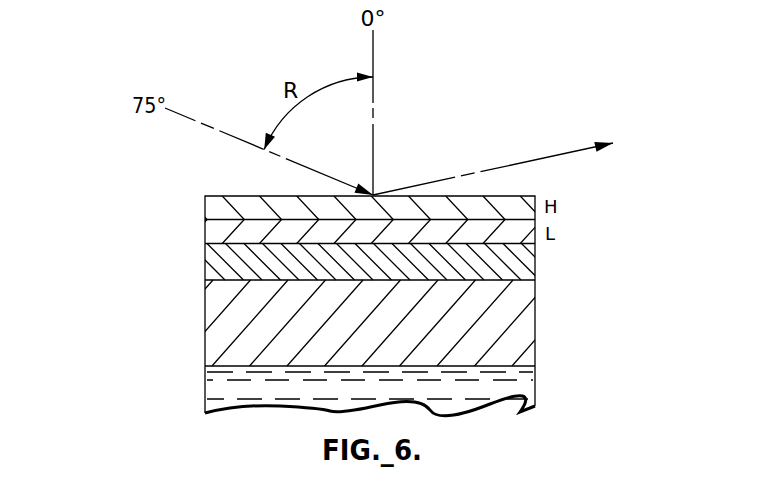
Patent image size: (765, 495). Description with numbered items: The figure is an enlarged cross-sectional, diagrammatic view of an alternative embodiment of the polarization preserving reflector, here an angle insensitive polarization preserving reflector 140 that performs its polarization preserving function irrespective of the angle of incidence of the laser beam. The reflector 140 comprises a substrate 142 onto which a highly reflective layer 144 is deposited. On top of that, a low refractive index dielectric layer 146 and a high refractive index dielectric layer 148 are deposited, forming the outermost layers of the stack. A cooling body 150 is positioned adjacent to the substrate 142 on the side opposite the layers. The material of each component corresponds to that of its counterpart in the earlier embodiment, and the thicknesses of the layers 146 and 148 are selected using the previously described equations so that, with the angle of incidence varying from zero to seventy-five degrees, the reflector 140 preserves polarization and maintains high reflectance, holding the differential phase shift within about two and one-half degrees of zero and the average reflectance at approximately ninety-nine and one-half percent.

The angle insensitive polarization preserving reflector 140 is at (88, 162).
The substrate 142 is at (205, 343).
The highly reflective layer 144 is at (205, 268).
The low refractive index dielectric layer 146 is at (205, 236).
The high refractive index dielectric layer 148 is at (205, 210).
The cooling body 150 is at (205, 399).